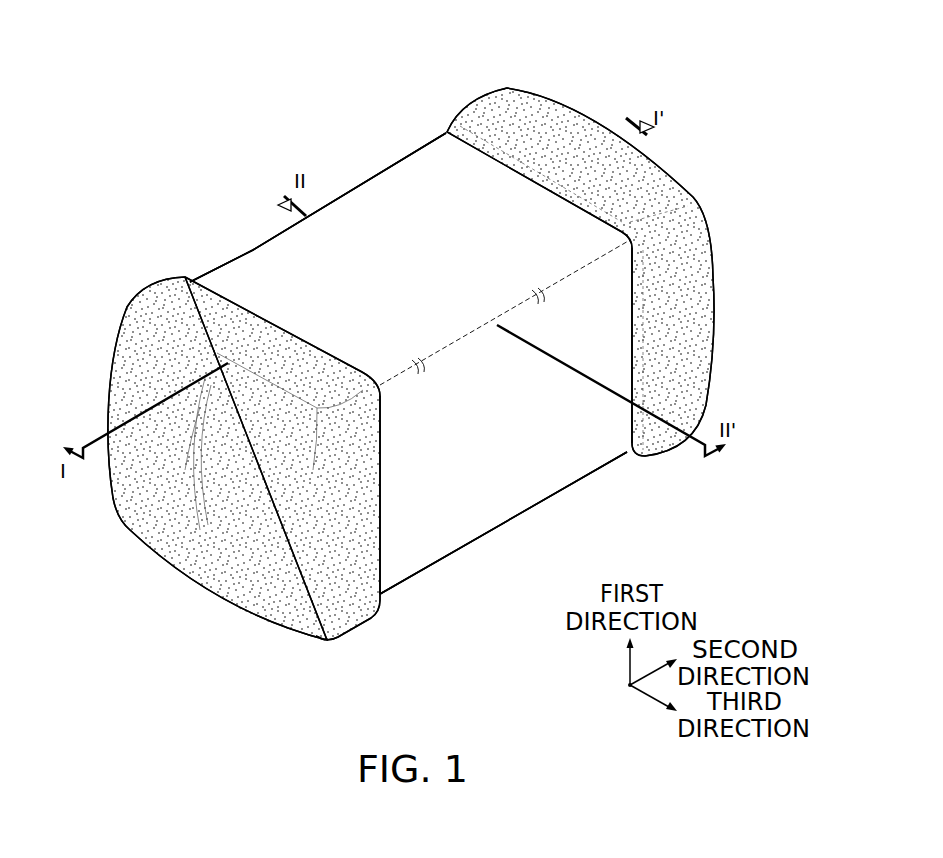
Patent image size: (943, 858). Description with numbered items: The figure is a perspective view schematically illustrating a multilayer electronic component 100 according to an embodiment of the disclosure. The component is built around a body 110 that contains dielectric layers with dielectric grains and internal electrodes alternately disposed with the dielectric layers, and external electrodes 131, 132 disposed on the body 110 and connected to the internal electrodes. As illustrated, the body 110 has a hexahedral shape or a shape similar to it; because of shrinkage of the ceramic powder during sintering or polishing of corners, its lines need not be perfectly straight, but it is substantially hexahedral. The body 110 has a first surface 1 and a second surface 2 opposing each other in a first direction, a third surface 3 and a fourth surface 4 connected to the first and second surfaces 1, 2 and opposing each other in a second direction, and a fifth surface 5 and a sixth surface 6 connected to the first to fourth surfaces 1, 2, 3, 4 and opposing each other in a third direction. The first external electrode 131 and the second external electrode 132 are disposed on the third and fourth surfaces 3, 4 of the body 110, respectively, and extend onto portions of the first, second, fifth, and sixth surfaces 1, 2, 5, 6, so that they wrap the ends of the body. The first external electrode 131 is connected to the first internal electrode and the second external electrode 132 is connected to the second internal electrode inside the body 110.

The multilayer electronic component 100 is at (292, 31).
The body 110 is at (353, 204).
The first external electrode 131 is at (165, 283).
The second external electrode 132 is at (488, 102).
The first surface 1 is at (473, 541).
The second surface 2 is at (398, 182).
The third surface 3 is at (172, 542).
The fourth surface 4 is at (576, 131).
The fifth surface 5 is at (247, 247).
The sixth surface 6 is at (534, 475).